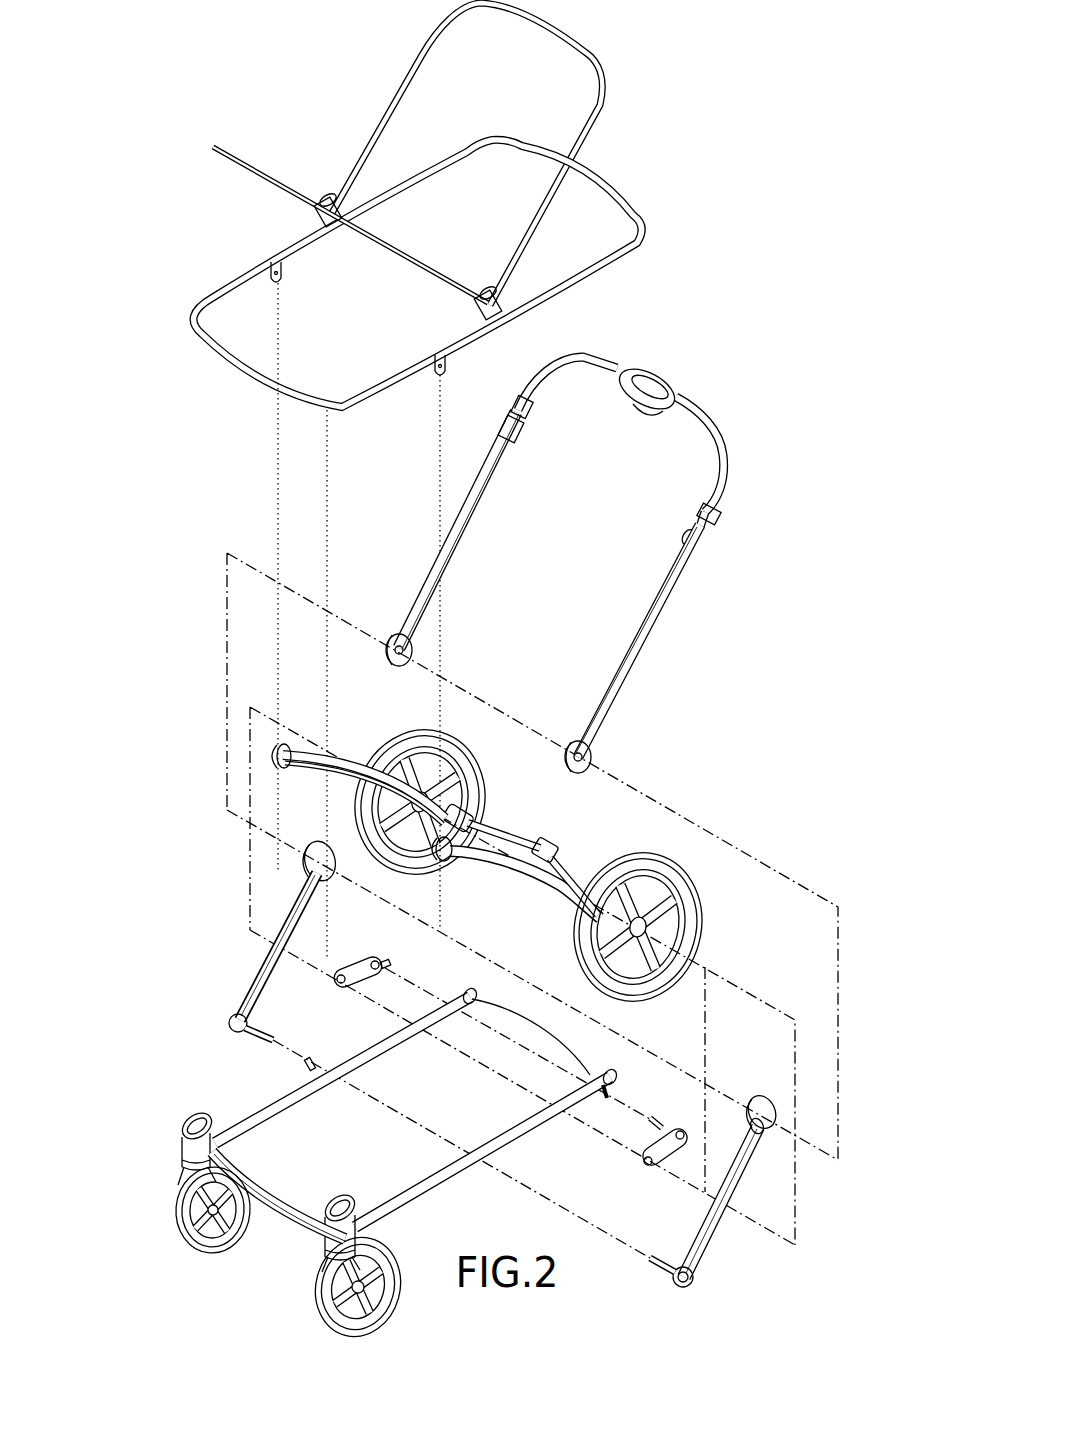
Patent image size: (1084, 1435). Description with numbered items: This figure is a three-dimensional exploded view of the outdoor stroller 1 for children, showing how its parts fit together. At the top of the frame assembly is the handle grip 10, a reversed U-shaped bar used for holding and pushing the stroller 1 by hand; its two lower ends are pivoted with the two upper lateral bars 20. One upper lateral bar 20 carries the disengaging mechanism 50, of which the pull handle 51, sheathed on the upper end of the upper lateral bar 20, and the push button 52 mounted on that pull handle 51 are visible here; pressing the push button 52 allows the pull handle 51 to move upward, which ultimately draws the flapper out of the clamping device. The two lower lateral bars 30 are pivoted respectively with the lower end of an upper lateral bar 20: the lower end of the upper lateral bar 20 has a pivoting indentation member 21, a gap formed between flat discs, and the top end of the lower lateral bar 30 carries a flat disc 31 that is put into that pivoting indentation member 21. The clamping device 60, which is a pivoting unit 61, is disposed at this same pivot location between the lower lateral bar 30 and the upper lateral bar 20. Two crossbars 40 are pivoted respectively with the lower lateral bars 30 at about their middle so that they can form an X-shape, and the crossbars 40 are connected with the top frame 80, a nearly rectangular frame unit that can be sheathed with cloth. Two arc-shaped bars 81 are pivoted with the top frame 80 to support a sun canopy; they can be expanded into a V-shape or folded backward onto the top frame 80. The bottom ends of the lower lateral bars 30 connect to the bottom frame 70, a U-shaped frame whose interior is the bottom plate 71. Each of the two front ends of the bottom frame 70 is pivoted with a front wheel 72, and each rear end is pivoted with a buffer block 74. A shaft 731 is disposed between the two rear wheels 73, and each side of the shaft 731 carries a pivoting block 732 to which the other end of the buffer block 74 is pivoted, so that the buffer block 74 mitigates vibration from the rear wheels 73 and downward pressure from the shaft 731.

The outdoor stroller 1 is at (822, 634).
The handle grip 10 is at (727, 455).
The upper lateral bar 20 is at (643, 663).
The pivoting indentation member 21 is at (568, 738).
The lower lateral bar 30 is at (712, 1248).
The flat disc 31 is at (757, 1098).
The crossbar 40 is at (553, 883).
The disengaging mechanism 50 is at (755, 528).
The pull handle 51 is at (706, 545).
The push button 52 is at (684, 532).
The clamping device 60 is at (594, 782).
The pivoting unit 61 is at (806, 1120).
The bottom frame 70 is at (248, 1105).
The bottom plate 71 is at (253, 1155).
The front wheel 72 is at (187, 1225).
The rear wheel 73 is at (692, 920).
The buffer block 74 is at (350, 958).
The top frame 80 is at (215, 358).
The arc-shaped bar 81 is at (594, 66).
The shaft 731 is at (502, 842).
The pivoting block 732 is at (417, 773).